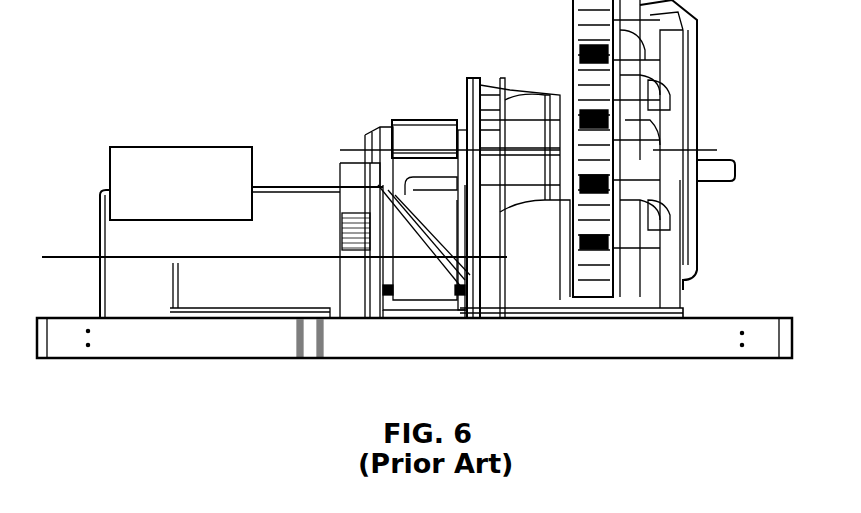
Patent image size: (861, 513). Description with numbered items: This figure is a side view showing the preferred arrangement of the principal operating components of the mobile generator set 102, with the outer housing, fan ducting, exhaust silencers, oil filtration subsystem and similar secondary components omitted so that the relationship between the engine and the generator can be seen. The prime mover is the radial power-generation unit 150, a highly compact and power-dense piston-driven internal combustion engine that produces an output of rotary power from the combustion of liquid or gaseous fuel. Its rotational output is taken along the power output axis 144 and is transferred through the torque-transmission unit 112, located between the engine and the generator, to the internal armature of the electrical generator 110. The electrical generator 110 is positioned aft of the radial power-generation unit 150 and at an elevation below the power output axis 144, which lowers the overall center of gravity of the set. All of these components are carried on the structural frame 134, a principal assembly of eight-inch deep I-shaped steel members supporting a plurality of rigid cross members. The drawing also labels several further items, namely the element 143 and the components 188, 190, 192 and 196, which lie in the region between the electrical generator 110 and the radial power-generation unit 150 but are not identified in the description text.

The generator set 102 is at (208, 90).
The electrical generator 110 is at (98, 204).
The axis 143 is at (76, 258).
The structural frame 134 is at (180, 333).
The bracket 188 is at (390, 120).
The coupling 192 is at (425, 130).
The flange 196 is at (465, 132).
The support bracket 190 is at (395, 320).
The torque-transmission unit 112 is at (460, 318).
The radial power-generation unit 150 is at (710, 72).
The power output axis 144 is at (703, 150).